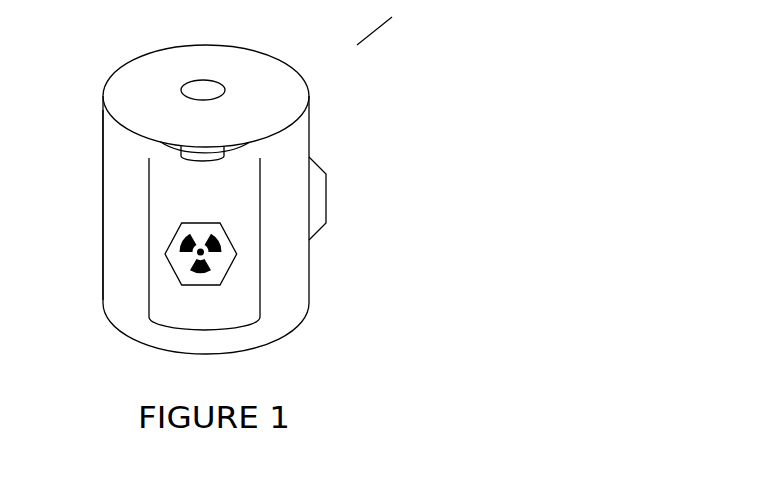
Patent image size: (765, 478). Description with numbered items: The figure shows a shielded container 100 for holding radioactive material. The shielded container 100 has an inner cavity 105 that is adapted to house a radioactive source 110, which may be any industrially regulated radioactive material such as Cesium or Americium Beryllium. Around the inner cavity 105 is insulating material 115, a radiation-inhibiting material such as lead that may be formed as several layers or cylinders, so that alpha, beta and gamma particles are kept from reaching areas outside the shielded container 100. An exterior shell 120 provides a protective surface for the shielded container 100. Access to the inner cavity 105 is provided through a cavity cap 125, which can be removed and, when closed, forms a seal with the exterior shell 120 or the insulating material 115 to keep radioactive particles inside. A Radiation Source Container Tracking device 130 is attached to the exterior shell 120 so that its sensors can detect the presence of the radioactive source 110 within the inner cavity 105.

The shielded container 100 is at (391, 22).
The inner cavity 105 is at (148, 318).
The radioactive source 110 is at (236, 250).
The insulating material 115 is at (115, 164).
The exterior shell 120 is at (308, 302).
The cavity cap 125 is at (203, 88).
The Radiation Source Container Tracking device (RSC) 130 is at (320, 178).